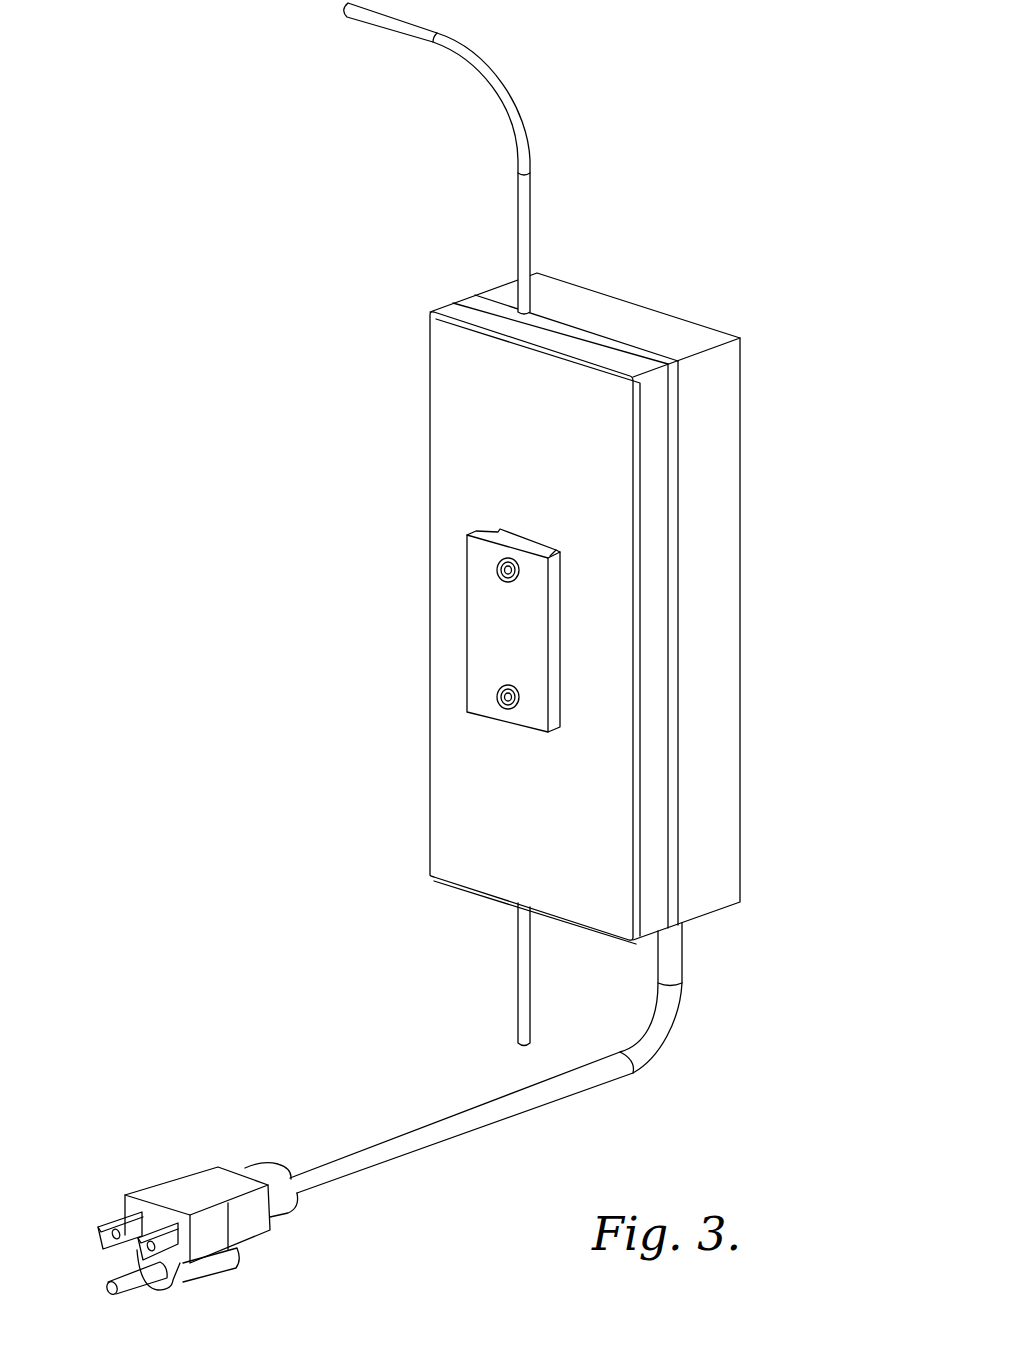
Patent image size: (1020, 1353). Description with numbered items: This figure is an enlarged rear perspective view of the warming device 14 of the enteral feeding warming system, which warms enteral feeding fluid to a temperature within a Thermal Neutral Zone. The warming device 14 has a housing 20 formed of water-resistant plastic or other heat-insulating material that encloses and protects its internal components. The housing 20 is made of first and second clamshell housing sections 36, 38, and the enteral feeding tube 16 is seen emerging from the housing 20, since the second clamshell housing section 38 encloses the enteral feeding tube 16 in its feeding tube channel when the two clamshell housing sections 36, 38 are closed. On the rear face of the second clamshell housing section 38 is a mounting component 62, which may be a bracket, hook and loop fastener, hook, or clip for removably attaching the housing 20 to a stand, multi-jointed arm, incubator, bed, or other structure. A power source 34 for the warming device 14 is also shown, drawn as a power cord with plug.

The warming device 14 is at (640, 228).
The enteral feeding tube 16 is at (523, 202).
The housing 20 is at (406, 377).
The power source 34 is at (164, 1129).
The first clamshell housing section 36 is at (683, 333).
The second clamshell housing section 38 is at (455, 308).
The mounting component 62 is at (485, 643).